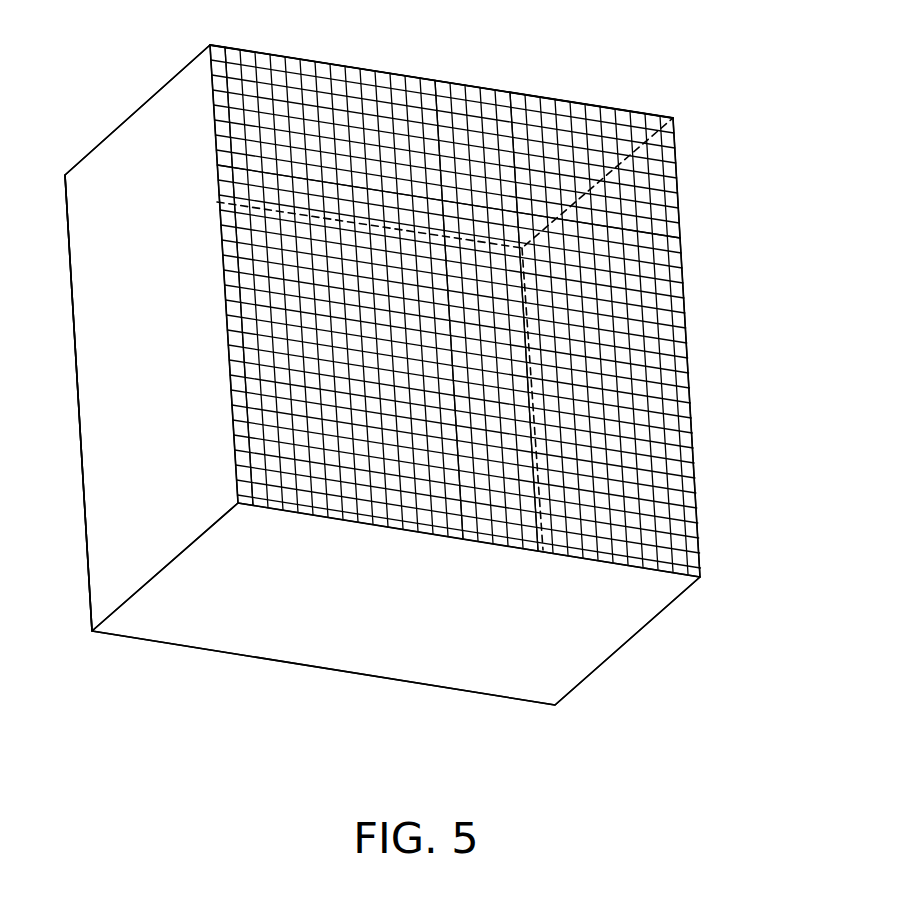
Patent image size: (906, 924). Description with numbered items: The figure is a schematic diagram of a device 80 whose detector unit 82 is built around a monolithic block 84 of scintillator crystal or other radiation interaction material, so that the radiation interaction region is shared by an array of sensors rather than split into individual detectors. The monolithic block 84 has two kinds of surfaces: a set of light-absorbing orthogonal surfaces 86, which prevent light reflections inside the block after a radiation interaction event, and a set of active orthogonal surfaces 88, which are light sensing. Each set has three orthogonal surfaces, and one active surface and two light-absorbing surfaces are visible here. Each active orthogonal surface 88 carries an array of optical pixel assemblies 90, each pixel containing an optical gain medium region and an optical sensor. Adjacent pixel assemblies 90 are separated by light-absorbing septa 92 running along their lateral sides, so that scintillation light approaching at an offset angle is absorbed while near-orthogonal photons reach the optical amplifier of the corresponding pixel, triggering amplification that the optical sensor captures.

The device 80 is at (694, 49).
The detector unit 82 is at (352, 68).
The monolithic block 84 is at (87, 548).
The light-absorbing orthogonal surfaces 86 is at (163, 322).
The active orthogonal surfaces 88 is at (532, 97).
The optical pixel assemblies 90 is at (292, 56).
The septa 92 is at (218, 50).